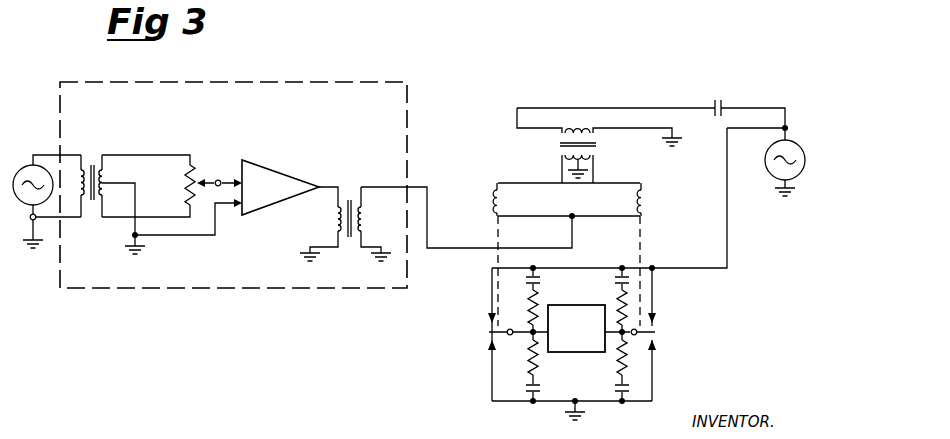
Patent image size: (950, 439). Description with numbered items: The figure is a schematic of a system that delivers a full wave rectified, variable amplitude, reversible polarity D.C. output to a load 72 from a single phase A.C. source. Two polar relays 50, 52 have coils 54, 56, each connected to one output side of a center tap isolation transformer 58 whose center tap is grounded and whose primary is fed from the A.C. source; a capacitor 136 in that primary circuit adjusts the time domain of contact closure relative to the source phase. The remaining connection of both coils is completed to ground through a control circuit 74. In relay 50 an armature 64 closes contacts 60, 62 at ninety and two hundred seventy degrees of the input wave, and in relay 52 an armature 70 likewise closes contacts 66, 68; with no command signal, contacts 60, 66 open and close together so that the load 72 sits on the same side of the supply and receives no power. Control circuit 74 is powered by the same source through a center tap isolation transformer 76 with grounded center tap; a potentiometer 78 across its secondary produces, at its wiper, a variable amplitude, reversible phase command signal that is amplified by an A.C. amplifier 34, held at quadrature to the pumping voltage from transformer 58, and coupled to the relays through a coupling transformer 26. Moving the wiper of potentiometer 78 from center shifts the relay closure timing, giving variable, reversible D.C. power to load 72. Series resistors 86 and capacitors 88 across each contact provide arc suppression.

The coupling transformer 26 is at (352, 190).
The A.C. amplifier 34 is at (252, 160).
The polar relay 50 is at (502, 172).
The polar relay 52 is at (637, 172).
The coil 54 is at (493, 201).
The coil 56 is at (644, 187).
The center tap isolation transformer 58 is at (573, 132).
The relay contact 60 is at (490, 313).
The relay contact 62 is at (490, 372).
The armature 64 is at (490, 336).
The relay contact 66 is at (654, 313).
The relay contact 68 is at (656, 370).
The armature 70 is at (655, 337).
The load 72 is at (577, 348).
The control circuit 74 is at (175, 74).
The center tap isolation transformer 76 is at (93, 164).
The potentiometer 78 is at (195, 170).
The resistors 86 is at (530, 352).
The capacitors 88 is at (617, 277).
The capacitor 136 is at (722, 103).